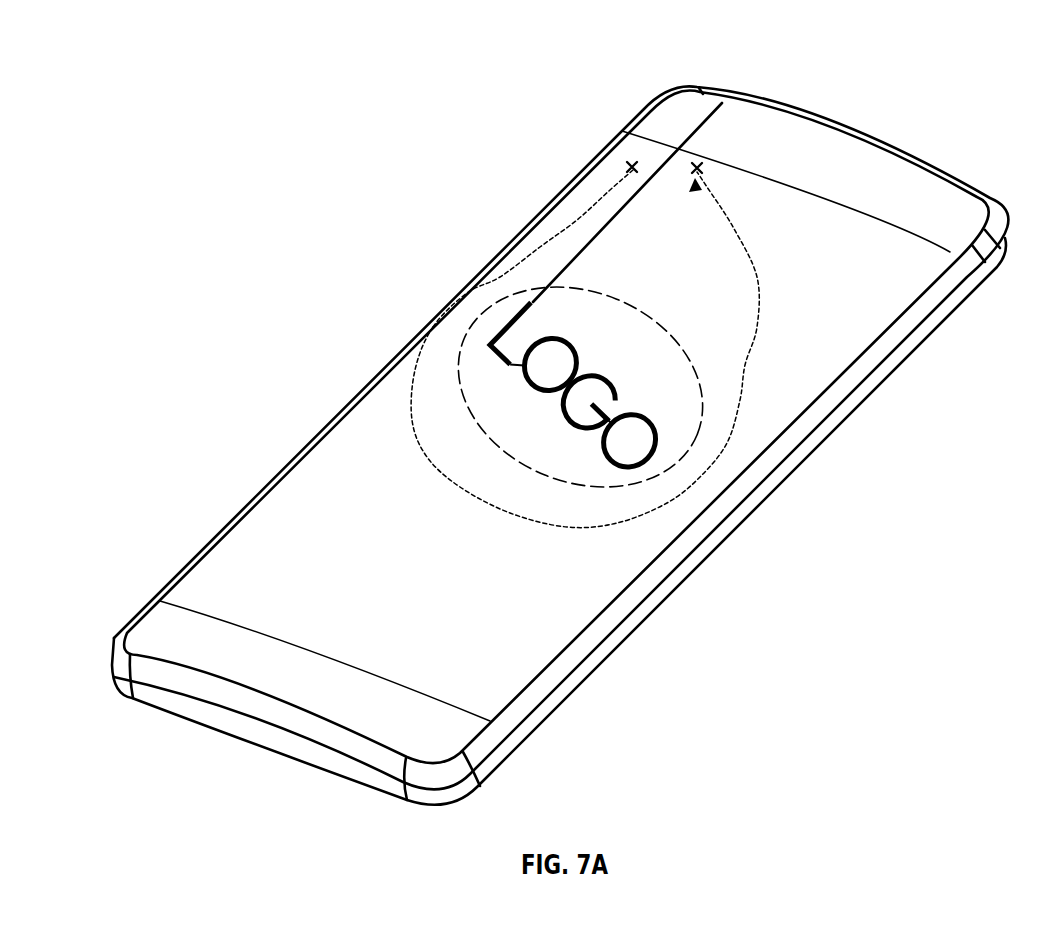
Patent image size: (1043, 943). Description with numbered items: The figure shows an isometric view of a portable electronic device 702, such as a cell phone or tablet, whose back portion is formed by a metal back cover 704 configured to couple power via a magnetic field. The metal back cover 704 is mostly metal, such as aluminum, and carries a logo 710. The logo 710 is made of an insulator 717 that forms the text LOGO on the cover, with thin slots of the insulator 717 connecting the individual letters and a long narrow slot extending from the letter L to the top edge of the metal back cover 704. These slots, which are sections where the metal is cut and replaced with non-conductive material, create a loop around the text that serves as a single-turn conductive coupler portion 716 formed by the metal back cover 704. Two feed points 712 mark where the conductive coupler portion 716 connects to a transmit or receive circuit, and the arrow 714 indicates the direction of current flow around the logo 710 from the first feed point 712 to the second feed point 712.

The portable electronic device 702 is at (138, 78).
The metal back cover 704 is at (594, 180).
The logo 710 is at (504, 298).
The feed points 712 is at (696, 163).
The arrow 714 is at (563, 231).
The conductive coupler portion 716 is at (683, 483).
The insulator 717 is at (577, 433).